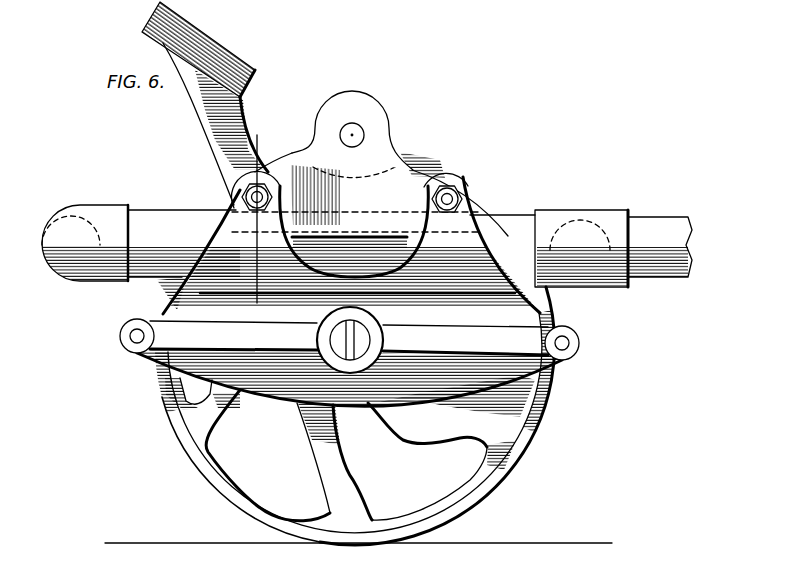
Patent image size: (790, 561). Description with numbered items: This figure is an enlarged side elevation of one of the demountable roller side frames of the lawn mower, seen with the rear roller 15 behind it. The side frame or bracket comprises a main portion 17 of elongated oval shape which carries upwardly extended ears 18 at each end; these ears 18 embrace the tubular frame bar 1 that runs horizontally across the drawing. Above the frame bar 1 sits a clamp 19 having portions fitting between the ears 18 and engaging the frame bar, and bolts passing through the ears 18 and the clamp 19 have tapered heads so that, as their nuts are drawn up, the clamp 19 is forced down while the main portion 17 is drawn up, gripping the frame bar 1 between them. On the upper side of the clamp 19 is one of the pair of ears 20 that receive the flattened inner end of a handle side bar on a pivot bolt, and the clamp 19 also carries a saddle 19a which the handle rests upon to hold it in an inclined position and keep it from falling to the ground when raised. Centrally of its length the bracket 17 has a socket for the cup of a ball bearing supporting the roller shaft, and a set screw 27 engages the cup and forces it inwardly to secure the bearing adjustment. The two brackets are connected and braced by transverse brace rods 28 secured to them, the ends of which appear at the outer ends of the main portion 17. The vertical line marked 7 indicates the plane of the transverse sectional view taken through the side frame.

The tubular frame bar 1 is at (660, 225).
The section line 7— 7 is at (258, 225).
The roller 15 is at (417, 400).
The main portion of roller side frame 17 is at (160, 313).
The ears 18 is at (233, 222).
The clamp 19 is at (398, 180).
The saddle 19a is at (253, 63).
The ears for handle 20 is at (370, 108).
The set screw 27 is at (360, 338).
The transverse brace rods 28 is at (134, 338).